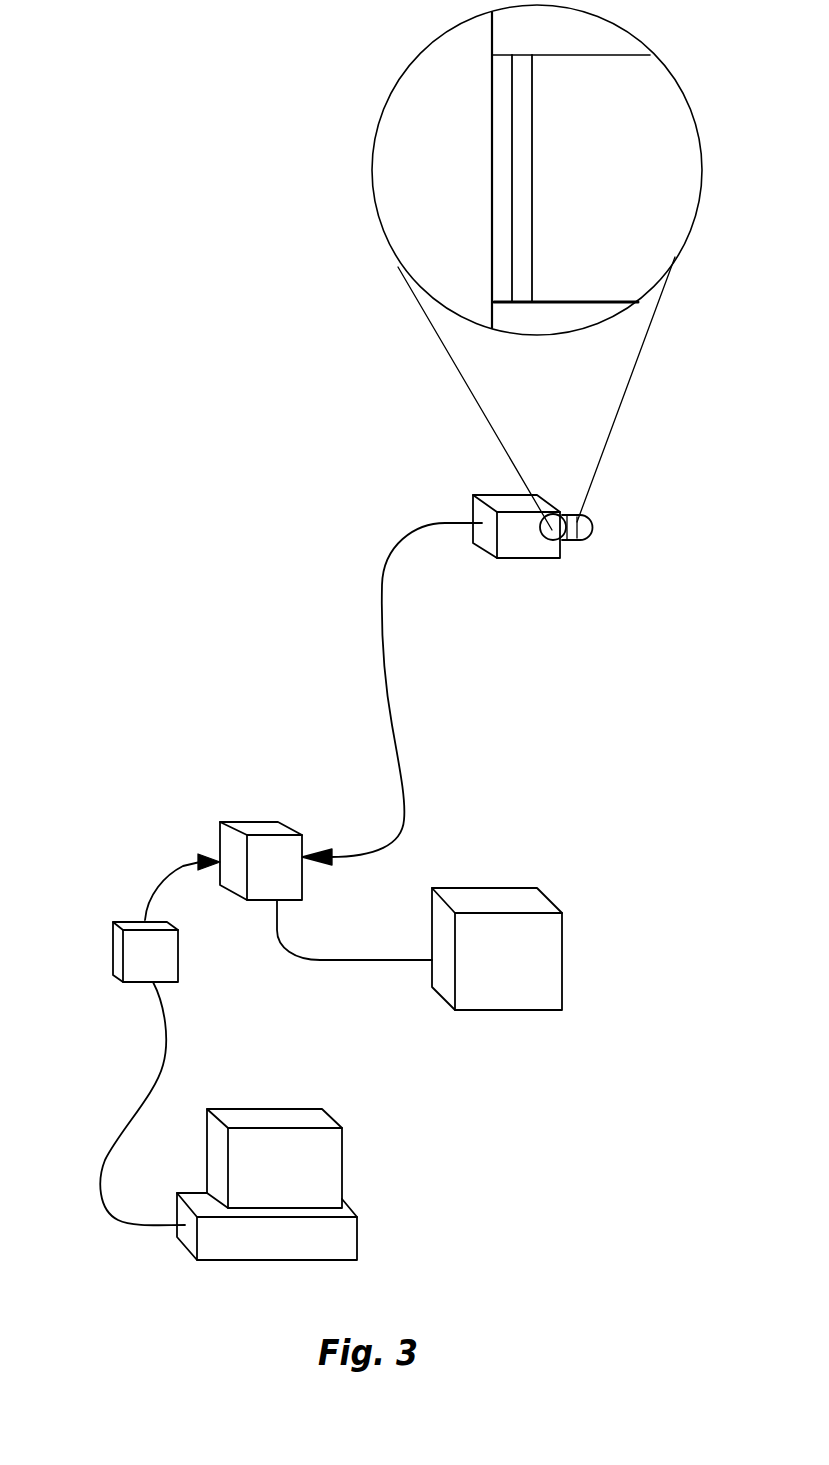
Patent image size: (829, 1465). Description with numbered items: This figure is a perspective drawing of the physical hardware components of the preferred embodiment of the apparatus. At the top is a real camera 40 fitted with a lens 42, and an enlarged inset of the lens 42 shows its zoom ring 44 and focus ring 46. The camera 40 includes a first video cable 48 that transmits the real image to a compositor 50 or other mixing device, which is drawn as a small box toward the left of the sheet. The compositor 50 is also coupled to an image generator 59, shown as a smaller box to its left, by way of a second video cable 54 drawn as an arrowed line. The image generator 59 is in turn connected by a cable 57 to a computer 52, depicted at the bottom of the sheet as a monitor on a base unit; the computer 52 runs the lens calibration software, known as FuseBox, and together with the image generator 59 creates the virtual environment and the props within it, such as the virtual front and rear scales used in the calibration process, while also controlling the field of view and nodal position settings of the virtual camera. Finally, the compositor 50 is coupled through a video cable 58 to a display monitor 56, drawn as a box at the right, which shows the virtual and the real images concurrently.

The real camera 40 is at (497, 497).
The lens 42 is at (592, 526).
The zoom ring 44 is at (503, 284).
The focus ring 46 is at (523, 260).
The first video cable 48 is at (383, 645).
The compositor 50 is at (252, 822).
The computer 52 is at (215, 1261).
The second video cable 54 is at (163, 885).
The display monitor 56 is at (510, 1012).
The cable 57 is at (170, 1035).
The video cable 58 is at (320, 959).
The image generator 59 is at (118, 960).